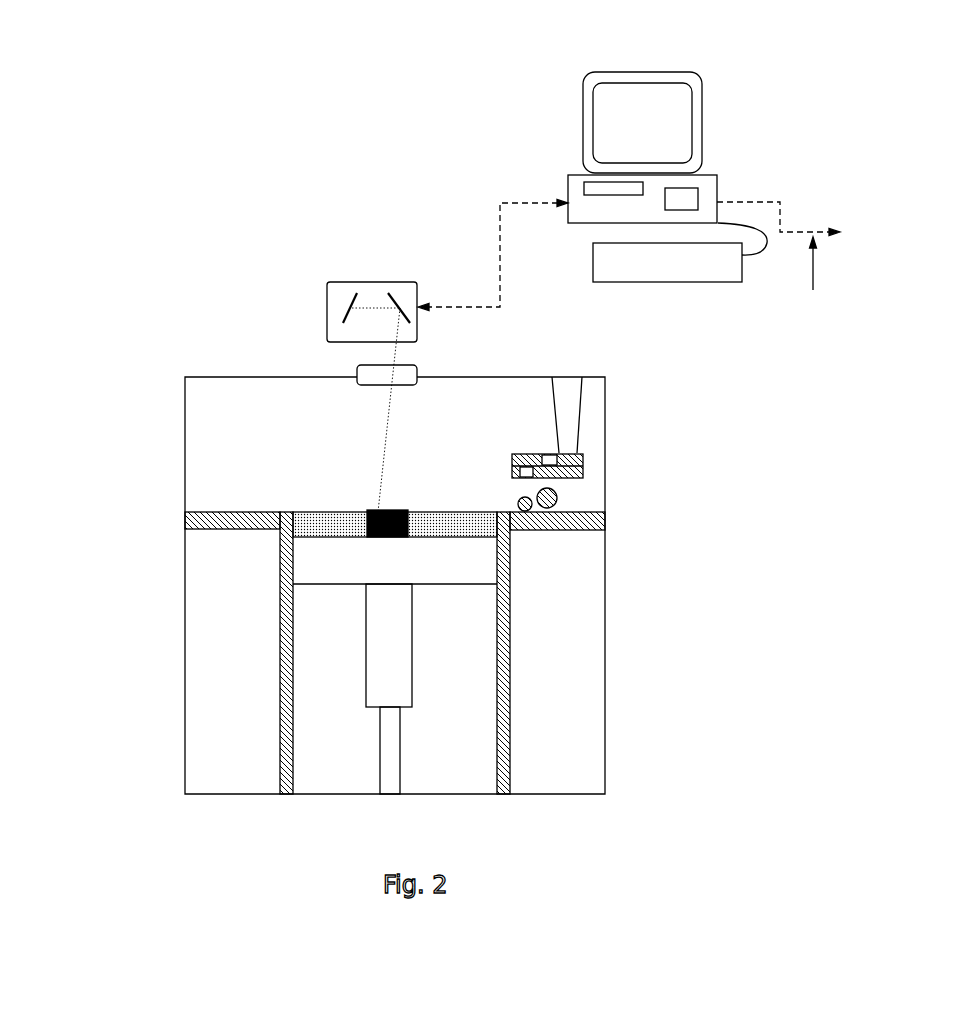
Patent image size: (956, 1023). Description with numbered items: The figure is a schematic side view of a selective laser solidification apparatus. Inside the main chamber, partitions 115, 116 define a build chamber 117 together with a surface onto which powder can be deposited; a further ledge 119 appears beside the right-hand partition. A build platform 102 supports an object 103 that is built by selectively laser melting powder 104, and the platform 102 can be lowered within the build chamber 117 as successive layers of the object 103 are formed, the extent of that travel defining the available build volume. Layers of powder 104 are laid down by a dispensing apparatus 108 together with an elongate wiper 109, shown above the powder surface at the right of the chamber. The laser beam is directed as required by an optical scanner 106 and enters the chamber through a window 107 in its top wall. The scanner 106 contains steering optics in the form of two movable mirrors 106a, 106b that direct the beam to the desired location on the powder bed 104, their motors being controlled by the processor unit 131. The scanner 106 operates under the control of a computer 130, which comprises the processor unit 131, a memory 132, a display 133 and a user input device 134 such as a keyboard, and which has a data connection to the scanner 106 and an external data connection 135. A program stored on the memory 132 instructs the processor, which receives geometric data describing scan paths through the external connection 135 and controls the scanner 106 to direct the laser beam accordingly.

The build platform 102 is at (421, 567).
The object 103 is at (355, 545).
The powder 104 is at (338, 534).
The optical scanner 106 is at (311, 316).
The movable mirror 106a is at (341, 284).
The movable mirror 106b is at (404, 282).
The window 107 is at (356, 360).
The dispensing apparatus 108 is at (597, 460).
The elongate wiper 109 is at (571, 494).
The partition 115 is at (203, 505).
The partition 116 is at (524, 677).
The build chamber 117 is at (485, 537).
The powder overflow ledge 119 is at (538, 514).
The computer 130 is at (542, 92).
The processor unit 131 is at (695, 188).
The memory 132 is at (583, 173).
The display 133 is at (680, 63).
The user input device 134 is at (696, 293).
The external data connection 135 is at (809, 273).